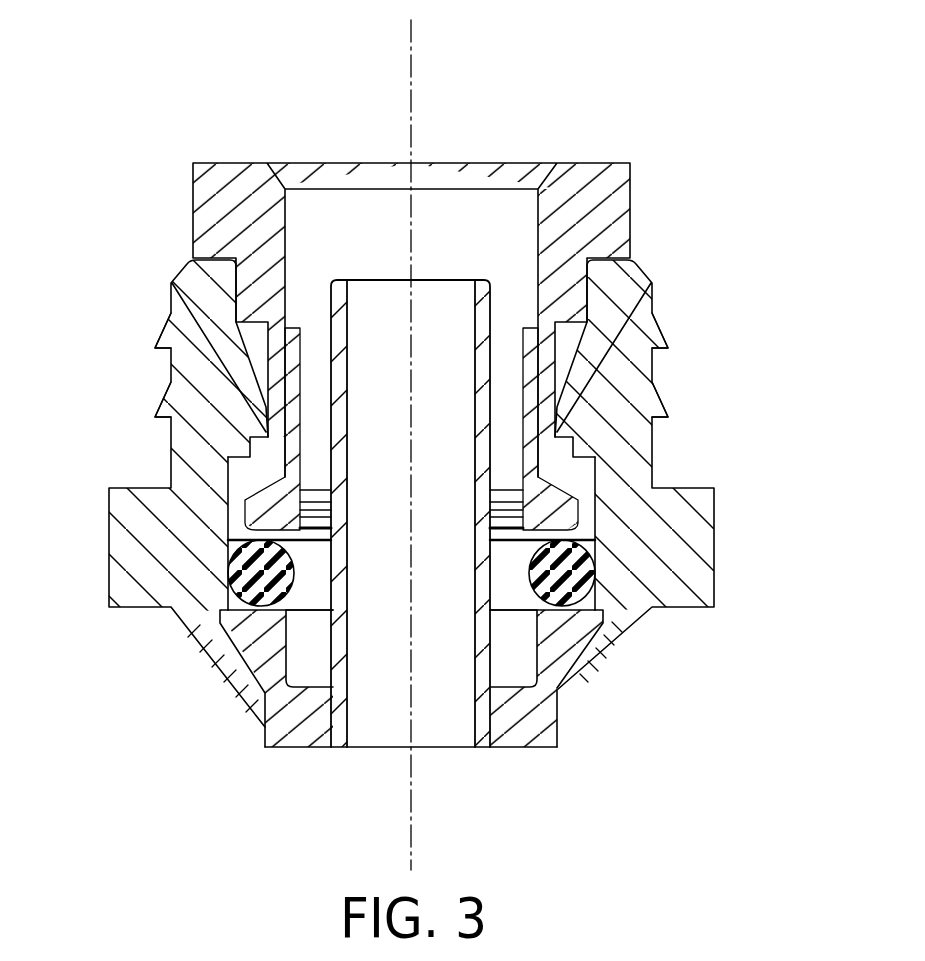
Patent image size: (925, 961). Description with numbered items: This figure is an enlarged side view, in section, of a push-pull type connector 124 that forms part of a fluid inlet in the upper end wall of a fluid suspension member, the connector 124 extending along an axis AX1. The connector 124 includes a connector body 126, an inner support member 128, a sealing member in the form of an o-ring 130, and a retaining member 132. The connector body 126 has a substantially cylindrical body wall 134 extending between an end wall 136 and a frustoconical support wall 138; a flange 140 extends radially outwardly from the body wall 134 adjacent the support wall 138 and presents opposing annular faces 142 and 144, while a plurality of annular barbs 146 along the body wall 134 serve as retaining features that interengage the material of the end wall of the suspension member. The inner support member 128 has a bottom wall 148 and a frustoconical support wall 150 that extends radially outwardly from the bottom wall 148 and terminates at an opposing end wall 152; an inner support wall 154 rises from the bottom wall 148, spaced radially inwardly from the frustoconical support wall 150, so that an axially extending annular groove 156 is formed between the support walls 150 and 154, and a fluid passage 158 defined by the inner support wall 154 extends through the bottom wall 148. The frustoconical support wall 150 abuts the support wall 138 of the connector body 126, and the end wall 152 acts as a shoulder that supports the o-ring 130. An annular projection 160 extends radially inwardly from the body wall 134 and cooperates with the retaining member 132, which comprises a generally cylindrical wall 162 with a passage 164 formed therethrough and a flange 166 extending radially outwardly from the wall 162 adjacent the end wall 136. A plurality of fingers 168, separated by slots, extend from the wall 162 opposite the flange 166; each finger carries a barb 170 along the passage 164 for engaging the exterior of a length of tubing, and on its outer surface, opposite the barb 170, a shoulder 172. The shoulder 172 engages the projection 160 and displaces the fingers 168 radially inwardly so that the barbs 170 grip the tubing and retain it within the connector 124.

The push-pull type connector 124 is at (529, 112).
The connector body 126 is at (158, 584).
The inner support member 128 is at (299, 742).
The o-ring 130 is at (600, 572).
The retaining member 132 is at (600, 212).
The body wall 134 is at (192, 447).
The end wall 136 is at (216, 265).
The frustoconical support wall 138 is at (200, 653).
The flange 140 is at (126, 546).
The annular face 142 is at (130, 489).
The annular face 144 is at (702, 608).
The annular barbs 146 is at (666, 412).
The bottom wall 148 is at (385, 750).
The frustoconical support wall 150 is at (268, 660).
The end wall 152 is at (600, 622).
The inner support wall 154 is at (476, 338).
The annular groove 156 is at (510, 655).
The fluid passage 158 is at (447, 685).
The annular projection 160 is at (565, 405).
The cylindrical wall 162 is at (572, 293).
The passage 164 is at (331, 242).
The flange 166 is at (208, 217).
The fingers 168 is at (273, 397).
The barb 170 is at (566, 510).
The shoulder 172 is at (528, 512).
The axis AX1 is at (416, 48).